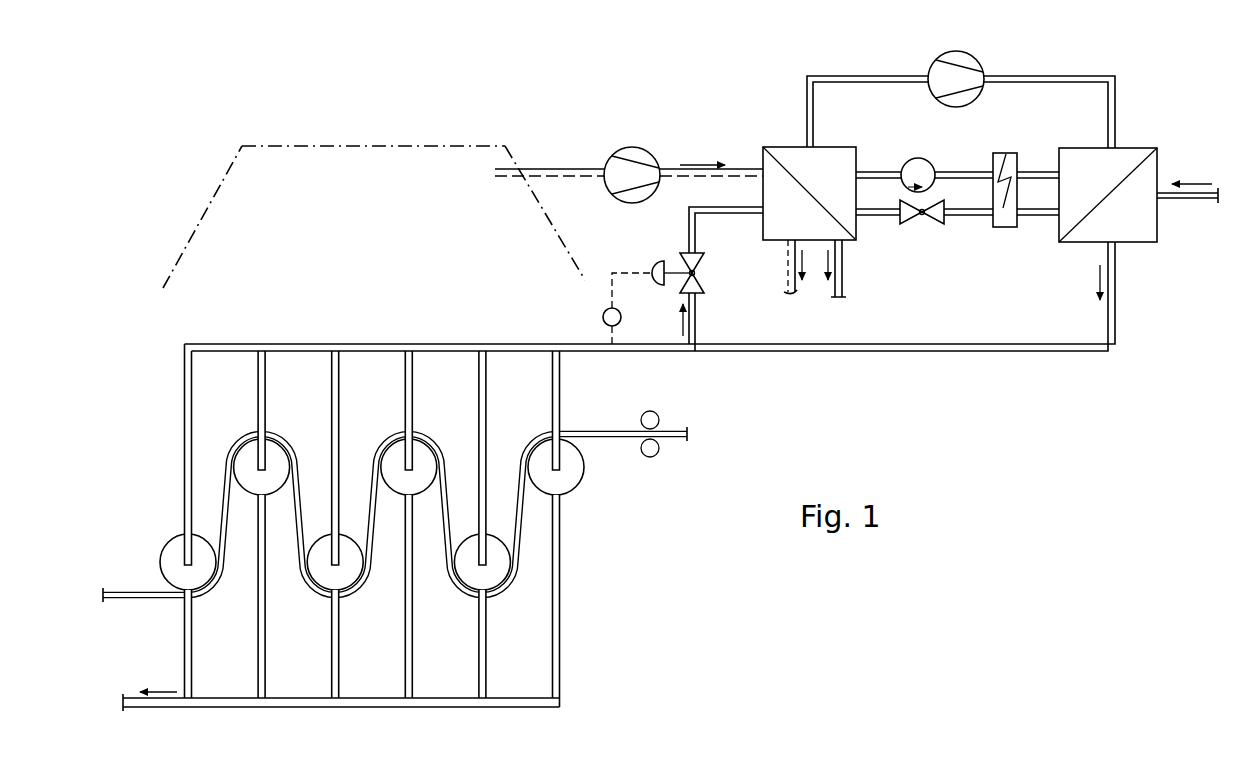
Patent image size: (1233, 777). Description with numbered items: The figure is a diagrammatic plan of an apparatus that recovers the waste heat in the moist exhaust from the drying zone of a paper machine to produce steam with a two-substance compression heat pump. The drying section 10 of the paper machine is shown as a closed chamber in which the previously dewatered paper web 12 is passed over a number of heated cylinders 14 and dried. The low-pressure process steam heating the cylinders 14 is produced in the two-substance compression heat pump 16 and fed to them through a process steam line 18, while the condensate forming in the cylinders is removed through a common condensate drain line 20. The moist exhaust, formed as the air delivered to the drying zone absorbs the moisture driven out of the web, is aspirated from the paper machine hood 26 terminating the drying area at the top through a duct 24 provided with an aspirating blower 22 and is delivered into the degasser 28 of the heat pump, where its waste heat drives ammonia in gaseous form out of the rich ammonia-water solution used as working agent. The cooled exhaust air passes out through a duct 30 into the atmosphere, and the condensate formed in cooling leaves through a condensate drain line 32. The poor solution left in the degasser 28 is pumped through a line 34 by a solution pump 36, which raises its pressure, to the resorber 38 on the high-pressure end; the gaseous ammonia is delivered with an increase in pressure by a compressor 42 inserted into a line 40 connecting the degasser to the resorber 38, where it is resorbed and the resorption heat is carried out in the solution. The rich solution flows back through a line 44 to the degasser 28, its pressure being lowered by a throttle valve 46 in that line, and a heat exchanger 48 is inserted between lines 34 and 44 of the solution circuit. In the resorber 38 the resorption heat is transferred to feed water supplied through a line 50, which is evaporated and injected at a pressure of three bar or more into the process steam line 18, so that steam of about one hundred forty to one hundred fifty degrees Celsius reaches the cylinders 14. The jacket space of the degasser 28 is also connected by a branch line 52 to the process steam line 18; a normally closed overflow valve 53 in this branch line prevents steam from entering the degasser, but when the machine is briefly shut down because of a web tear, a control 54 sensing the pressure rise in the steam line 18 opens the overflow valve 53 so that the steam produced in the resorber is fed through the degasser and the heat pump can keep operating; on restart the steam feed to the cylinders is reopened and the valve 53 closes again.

The drying section 10 is at (253, 137).
The paper web 12 is at (602, 432).
The heated cylinders 14 is at (170, 540).
The two-substance compression heat pump 16 is at (1037, 68).
The process steam line 18 is at (863, 352).
The condensate drain line 20 is at (373, 708).
The aspirating blower 22 is at (641, 150).
The duct 24 is at (567, 170).
The paper machine hood 26 is at (456, 142).
The degasser 28 is at (782, 143).
The duct 30 is at (797, 294).
The condensate drain line 32 is at (845, 263).
The line 34 is at (958, 170).
The solution pump 36 is at (918, 158).
The resorber 38 is at (1129, 145).
The gas line 40 is at (897, 75).
The blower 42 is at (974, 52).
The line 44 is at (968, 216).
The throttle valve 46 is at (922, 224).
The heat exchanger 48 is at (1012, 228).
The line 50 is at (1198, 200).
The branch line 52 is at (698, 320).
The overflow valve 53 is at (698, 273).
The sensor 54 is at (603, 316).